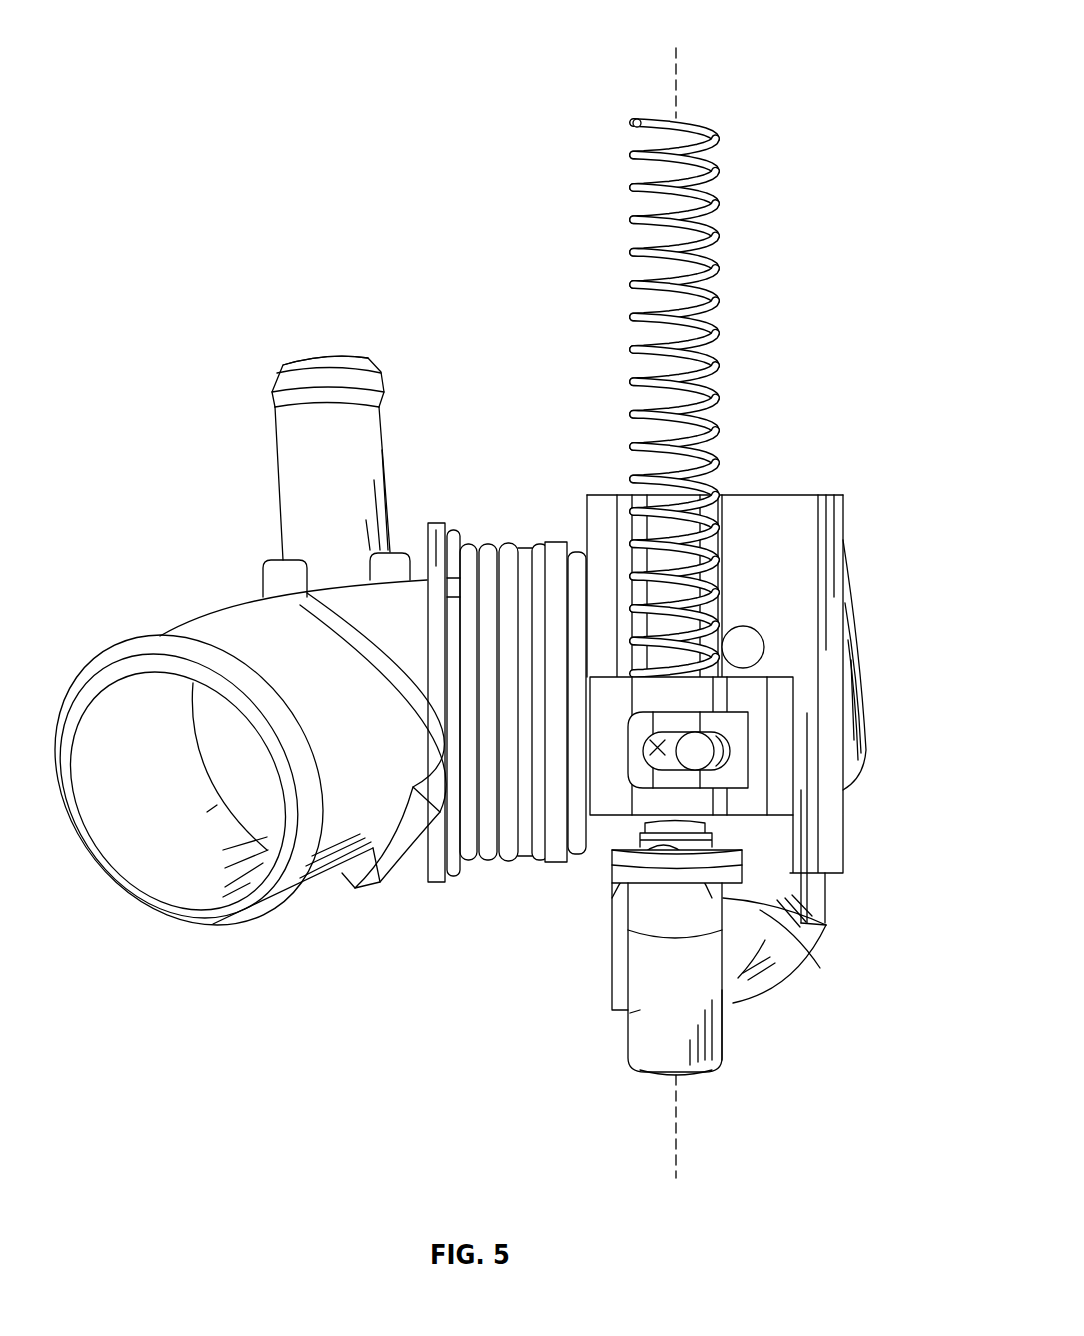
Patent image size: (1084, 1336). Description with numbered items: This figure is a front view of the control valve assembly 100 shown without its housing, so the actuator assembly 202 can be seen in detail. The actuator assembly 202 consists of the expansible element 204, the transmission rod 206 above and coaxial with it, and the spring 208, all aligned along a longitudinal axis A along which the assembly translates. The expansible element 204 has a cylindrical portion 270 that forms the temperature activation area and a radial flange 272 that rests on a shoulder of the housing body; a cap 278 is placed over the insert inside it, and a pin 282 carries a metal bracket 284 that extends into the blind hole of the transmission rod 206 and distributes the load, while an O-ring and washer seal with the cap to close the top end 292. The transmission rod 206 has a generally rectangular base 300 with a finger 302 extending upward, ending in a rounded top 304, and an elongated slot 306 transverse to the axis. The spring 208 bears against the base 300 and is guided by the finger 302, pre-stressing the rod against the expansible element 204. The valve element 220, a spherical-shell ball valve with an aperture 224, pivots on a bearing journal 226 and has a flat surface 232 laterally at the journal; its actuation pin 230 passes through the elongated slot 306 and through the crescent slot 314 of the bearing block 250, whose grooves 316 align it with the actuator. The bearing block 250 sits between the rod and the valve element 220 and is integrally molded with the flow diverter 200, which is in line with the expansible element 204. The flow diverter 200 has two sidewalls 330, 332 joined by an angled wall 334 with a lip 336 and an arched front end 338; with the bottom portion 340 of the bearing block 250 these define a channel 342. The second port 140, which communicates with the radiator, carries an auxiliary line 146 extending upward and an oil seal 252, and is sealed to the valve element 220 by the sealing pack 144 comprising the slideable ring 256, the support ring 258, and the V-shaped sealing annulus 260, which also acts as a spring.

The control valve assembly 100 is at (124, 30).
The second port 140 is at (150, 878).
The sealing pack 144 is at (498, 860).
The auxiliary line 146 is at (285, 425).
The flow diverter 200 is at (742, 992).
The actuator assembly 202 is at (783, 752).
The expansible element 204 is at (632, 1045).
The transmission rod 206 is at (790, 740).
The spring 208 is at (716, 175).
The valve element 220 is at (846, 615).
The aperture 224 is at (864, 680).
The bearing journal 226 is at (750, 632).
The actuation pin 230 is at (708, 752).
The flat surface 232 is at (850, 652).
The bearing block 250 is at (806, 537).
The oil seal 252 is at (480, 864).
The slideable ring 256 is at (566, 556).
The support ring 258 is at (548, 538).
The sealing annulus 260 is at (482, 868).
The cylindrical portion 270 is at (690, 1050).
The radial flange 272 is at (812, 925).
The cap 278 is at (612, 890).
The pin 282 is at (738, 852).
The bracket 284 is at (640, 836).
The top end 292 is at (515, 855).
The base 300 is at (614, 686).
The finger 302 is at (690, 517).
The rounded top 304 is at (718, 500).
The elongated slot 306 is at (659, 752).
The slot 314 is at (745, 630).
The grooves 316 is at (632, 523).
The sidewall 330 is at (616, 962).
The sidewall 332 is at (826, 916).
The angled wall 334 is at (760, 945).
The lip 336 is at (806, 957).
The front end 338 is at (718, 1038).
The bottom portion 340 is at (832, 878).
The channel 342 is at (730, 930).